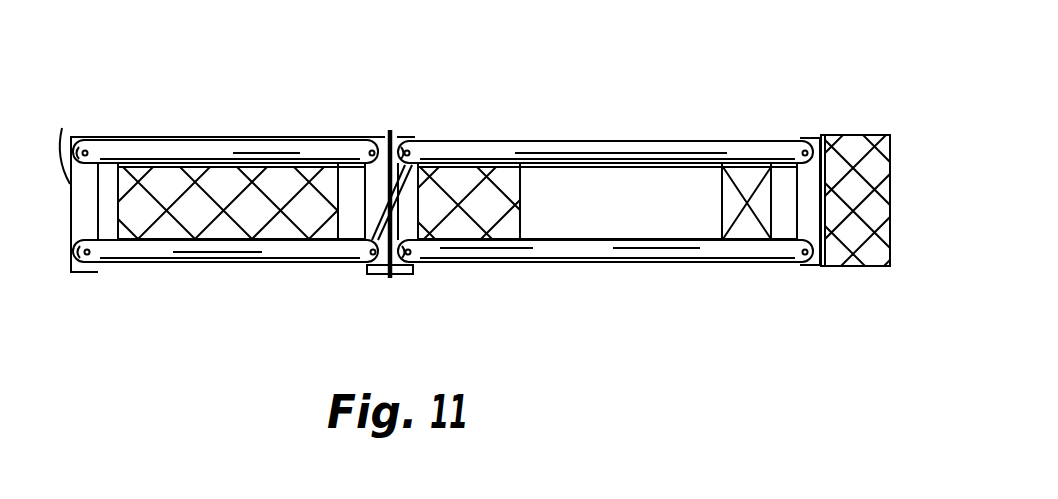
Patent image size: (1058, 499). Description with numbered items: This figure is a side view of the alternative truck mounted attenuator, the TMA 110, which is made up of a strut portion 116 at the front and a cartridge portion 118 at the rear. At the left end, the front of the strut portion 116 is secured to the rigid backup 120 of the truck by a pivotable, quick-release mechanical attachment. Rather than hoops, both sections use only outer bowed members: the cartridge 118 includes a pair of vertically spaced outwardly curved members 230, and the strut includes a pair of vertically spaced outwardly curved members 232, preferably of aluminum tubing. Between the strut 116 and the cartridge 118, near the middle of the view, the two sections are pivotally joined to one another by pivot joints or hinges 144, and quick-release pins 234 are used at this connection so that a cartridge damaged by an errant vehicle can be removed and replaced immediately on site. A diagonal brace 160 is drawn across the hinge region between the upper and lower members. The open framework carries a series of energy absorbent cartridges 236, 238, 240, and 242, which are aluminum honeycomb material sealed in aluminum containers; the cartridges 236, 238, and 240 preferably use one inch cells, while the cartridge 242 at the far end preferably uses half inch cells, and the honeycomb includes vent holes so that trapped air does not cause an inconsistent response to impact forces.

The truck mounted attenuator 110 is at (650, 109).
The strut portion 116 is at (221, 268).
The cartridge portion 118 is at (687, 268).
The backup 120 is at (64, 130).
The pivot joints 144 is at (390, 133).
The diagonal brace strap 160 is at (378, 216).
The outwardly curved members 230 is at (575, 152).
The outwardly curved members 232 is at (263, 145).
The quick-release pins 234 is at (412, 153).
The energy absorbent cartridge 236 is at (157, 197).
The energy absorbent cartridge 238 is at (495, 212).
The energy absorbent cartridge 240 is at (737, 178).
The energy absorbent cartridge 242 is at (852, 150).